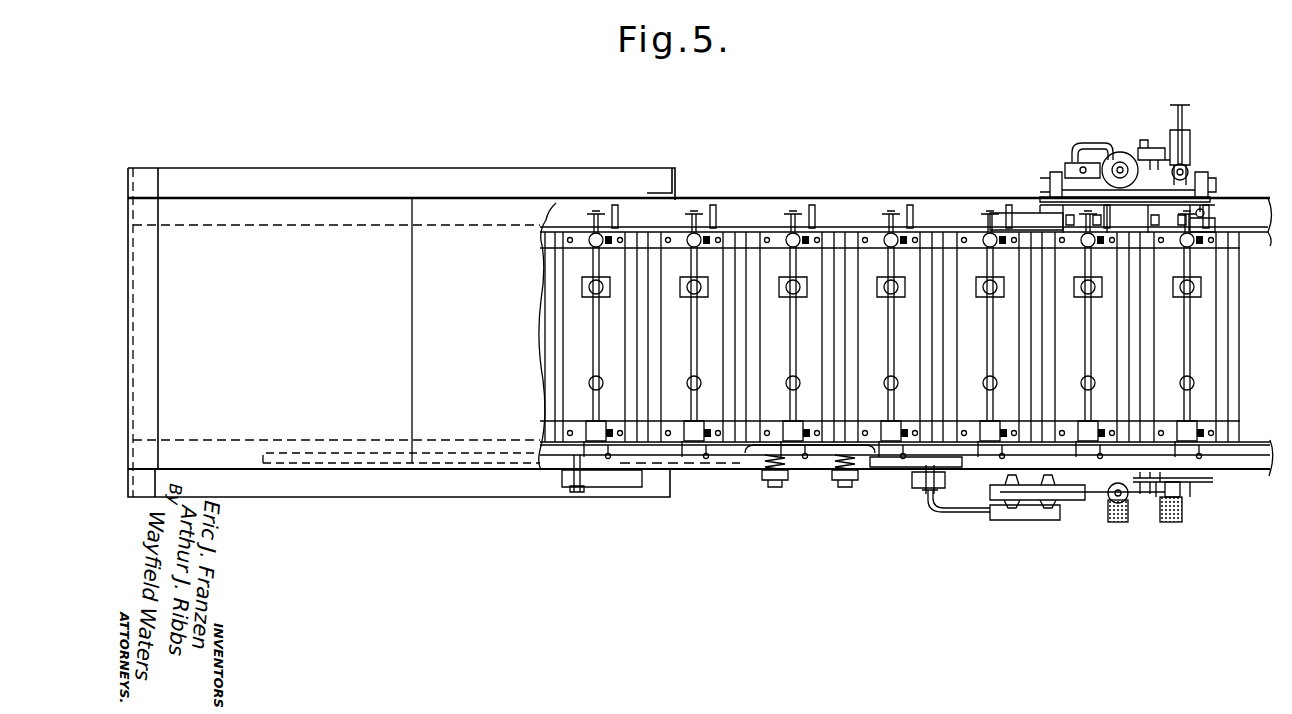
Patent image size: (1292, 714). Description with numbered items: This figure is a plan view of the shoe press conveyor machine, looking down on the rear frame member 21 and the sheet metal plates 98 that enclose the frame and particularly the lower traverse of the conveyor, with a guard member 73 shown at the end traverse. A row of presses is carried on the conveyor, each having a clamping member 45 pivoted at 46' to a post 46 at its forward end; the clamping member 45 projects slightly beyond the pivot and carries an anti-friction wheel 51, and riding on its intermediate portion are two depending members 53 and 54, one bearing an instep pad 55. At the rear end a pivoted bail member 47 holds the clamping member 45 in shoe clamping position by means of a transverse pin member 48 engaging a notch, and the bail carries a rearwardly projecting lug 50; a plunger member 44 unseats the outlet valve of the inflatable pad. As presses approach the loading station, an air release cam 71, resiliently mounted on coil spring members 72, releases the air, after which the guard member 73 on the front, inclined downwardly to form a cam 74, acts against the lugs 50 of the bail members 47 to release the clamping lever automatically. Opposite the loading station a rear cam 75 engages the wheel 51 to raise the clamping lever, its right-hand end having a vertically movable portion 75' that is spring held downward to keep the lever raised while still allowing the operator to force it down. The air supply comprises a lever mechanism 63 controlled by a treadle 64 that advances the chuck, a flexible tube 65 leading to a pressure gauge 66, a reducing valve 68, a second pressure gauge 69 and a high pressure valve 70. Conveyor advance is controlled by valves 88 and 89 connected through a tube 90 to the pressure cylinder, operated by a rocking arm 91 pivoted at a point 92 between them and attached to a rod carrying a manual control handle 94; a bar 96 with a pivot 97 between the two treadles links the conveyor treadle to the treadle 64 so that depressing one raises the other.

The sheet metal plates 98 is at (247, 212).
The guard member 73 is at (283, 455).
The rear frame member 21 is at (718, 470).
The anti-friction wheel 51 is at (700, 214).
The post 46 is at (891, 211).
The pivot 46' is at (910, 192).
The clamping member 45 is at (596, 347).
The instep pad 55 is at (584, 290).
The depending member 53 is at (597, 288).
The depending member 54 is at (592, 383).
The bail member 47 is at (587, 428).
The transverse pin member 48 is at (606, 430).
The rearwardly projecting lug 50 is at (597, 437).
The plunger member 44 is at (610, 458).
The air release cam 71 is at (810, 452).
The coil spring members 72 is at (855, 462).
The cam 74 is at (900, 462).
The tube 90 is at (964, 514).
The pivot point 92 is at (1036, 500).
The valve 89 is at (1013, 508).
The valve 88 is at (1050, 508).
The rocking arm 91 is at (1105, 505).
The manual control handle 94 is at (1138, 522).
The bar 96 is at (1172, 522).
The treadle 64 is at (1184, 508).
The pivot 97 is at (1156, 500).
The cam 75 is at (1102, 189).
The vertically movable portion 75' is at (1165, 200).
The flexible tube 65 is at (1110, 142).
The pressure gauge 66 is at (1072, 160).
The reducing valve 68 is at (1120, 168).
The second pressure gauge 69 is at (1150, 148).
The lever mechanism 63 is at (1186, 125).
The high pressure valve 70 is at (1190, 172).